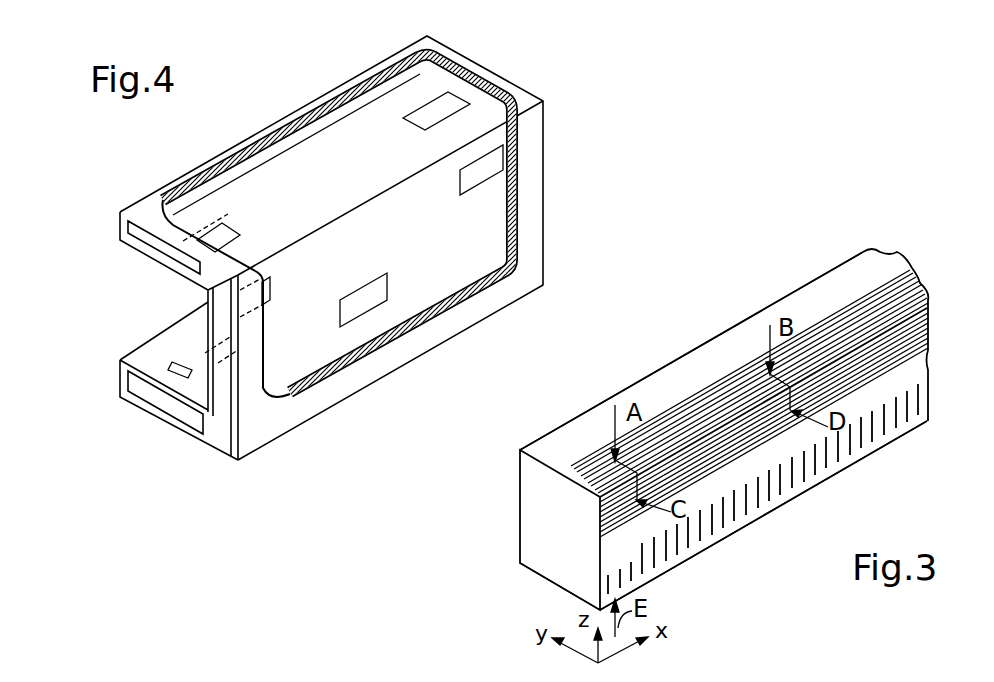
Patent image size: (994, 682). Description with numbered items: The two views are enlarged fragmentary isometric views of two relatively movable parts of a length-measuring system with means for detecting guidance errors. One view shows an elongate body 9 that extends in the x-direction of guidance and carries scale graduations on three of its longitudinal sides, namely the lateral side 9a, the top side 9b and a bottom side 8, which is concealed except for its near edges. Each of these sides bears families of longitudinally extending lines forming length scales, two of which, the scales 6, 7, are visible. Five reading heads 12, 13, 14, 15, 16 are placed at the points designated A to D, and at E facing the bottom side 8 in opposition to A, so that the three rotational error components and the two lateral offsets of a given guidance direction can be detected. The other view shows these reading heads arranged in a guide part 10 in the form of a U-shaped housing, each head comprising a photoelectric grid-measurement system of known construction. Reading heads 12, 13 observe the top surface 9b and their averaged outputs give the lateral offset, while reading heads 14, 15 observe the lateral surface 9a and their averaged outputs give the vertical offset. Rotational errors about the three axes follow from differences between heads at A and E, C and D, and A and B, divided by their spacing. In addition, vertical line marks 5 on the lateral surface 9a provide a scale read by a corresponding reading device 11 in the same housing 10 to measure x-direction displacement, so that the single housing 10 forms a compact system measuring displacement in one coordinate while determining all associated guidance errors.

In FIG. 3, the vertical line marks 5 is at (928, 388).
In FIG. 3, the length scale 6 is at (927, 328).
In FIG. 3, the length scale 7 is at (927, 283).
In FIG. 3, the bottom side 8 is at (547, 582).
In FIG. 3, the elongate body 9 is at (546, 516).
In FIG. 3, the lateral side 9a is at (853, 457).
In FIG. 3, the top side 9b is at (817, 291).
In FIG. 4, the guide part 10 is at (127, 242).
In FIG. 4, the reading device 11 is at (386, 281).
In FIG. 4, the reading head 12 is at (224, 230).
In FIG. 4, the reading head 13 is at (422, 127).
In FIG. 4, the reading head 14 is at (272, 284).
In FIG. 4, the reading head 15 is at (463, 192).
In FIG. 4, the reading head 16 is at (186, 364).